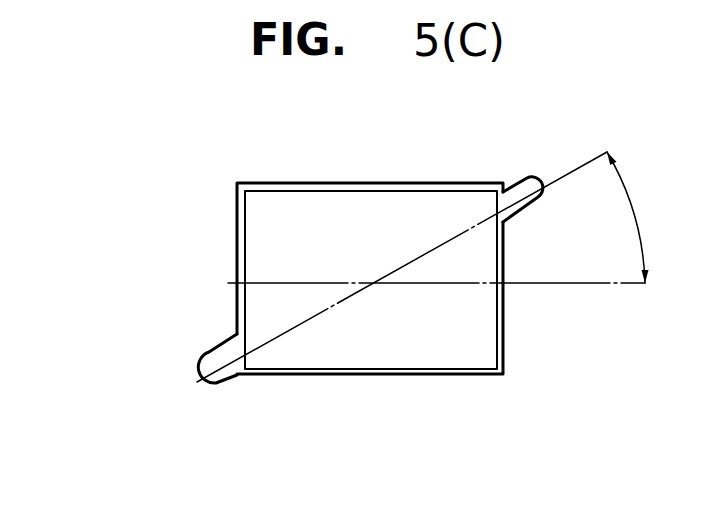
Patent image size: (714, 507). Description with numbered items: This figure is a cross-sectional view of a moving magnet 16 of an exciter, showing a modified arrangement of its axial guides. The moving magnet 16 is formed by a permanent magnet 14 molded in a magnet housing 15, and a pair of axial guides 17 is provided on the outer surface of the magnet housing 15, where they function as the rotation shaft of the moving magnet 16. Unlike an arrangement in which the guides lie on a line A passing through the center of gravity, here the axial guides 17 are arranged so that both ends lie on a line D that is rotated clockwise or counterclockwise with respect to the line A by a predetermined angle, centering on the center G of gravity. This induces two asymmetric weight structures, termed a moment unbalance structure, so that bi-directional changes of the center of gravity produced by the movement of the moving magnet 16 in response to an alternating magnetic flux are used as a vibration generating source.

The permanent magnet 14 is at (473, 333).
The magnet housing 15 is at (452, 375).
The moving magnet 16 is at (323, 270).
The axial guides 17 is at (532, 181).
The center of the gravity G is at (372, 286).
The line D is at (583, 162).
The line A is at (598, 296).